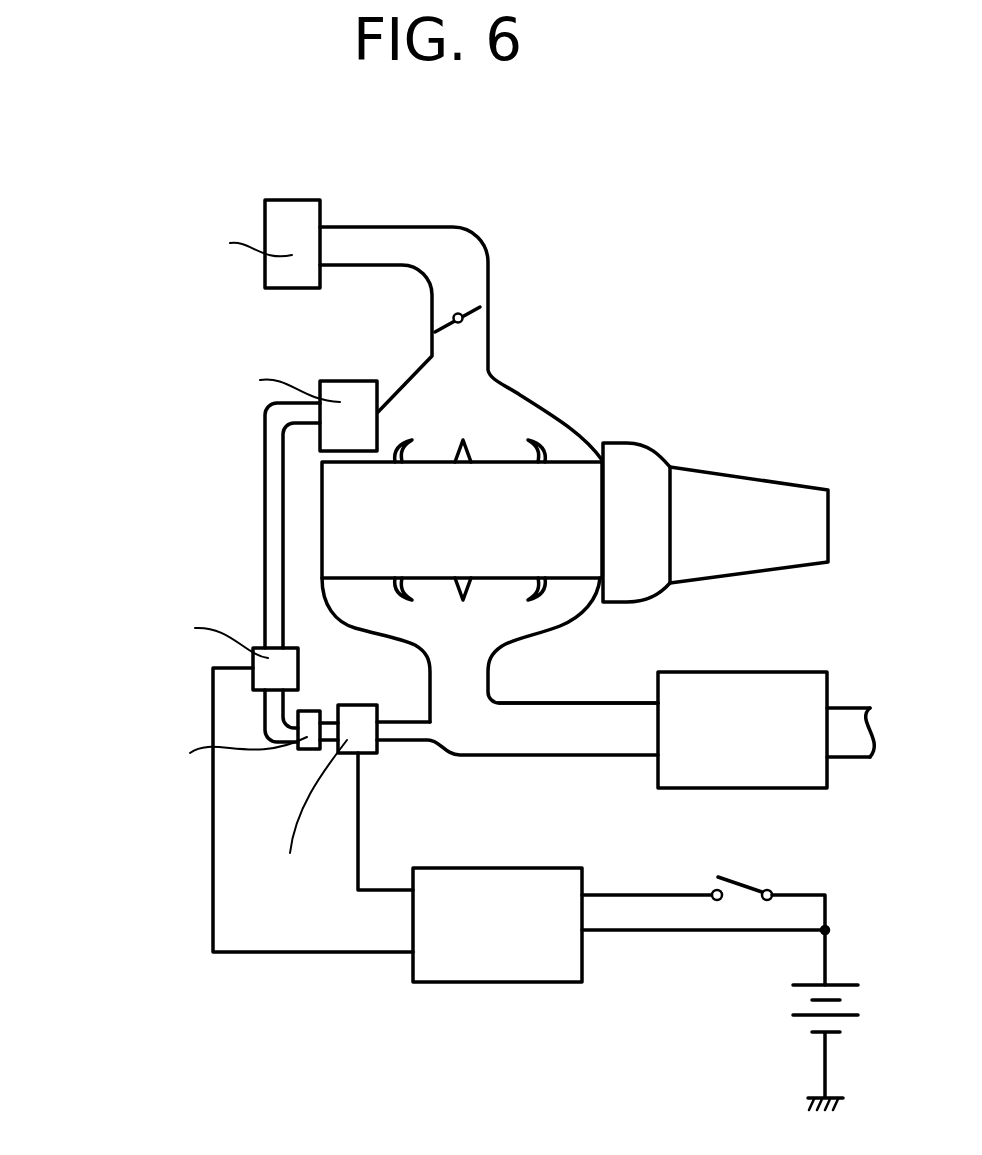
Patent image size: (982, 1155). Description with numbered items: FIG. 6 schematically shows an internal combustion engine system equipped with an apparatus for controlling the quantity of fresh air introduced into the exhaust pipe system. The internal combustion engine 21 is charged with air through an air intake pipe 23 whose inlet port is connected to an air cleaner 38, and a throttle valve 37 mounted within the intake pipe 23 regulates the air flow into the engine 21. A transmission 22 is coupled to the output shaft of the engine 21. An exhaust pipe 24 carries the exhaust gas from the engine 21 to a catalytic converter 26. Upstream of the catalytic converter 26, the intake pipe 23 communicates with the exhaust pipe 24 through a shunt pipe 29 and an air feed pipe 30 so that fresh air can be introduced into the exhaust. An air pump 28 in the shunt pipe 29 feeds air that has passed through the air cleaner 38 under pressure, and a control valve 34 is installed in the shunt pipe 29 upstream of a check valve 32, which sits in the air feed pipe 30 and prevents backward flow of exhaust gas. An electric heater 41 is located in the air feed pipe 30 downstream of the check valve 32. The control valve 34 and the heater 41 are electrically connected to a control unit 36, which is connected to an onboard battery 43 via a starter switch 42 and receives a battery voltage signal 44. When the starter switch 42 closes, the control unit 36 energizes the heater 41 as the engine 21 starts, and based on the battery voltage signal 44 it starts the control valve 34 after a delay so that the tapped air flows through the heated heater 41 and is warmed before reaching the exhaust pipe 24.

The internal combustion engine 21 is at (557, 493).
The transmission 22 is at (722, 487).
The air intake pipe 23 is at (470, 388).
The exhaust pipe 24 is at (538, 740).
The catalytic converter 26 is at (800, 777).
The air pump 28 is at (345, 387).
The shunt pipe 29 is at (265, 525).
The air feed pipe 30 is at (412, 737).
The check valve 32 is at (307, 737).
The control valve 34 is at (257, 655).
The control unit 36 is at (490, 968).
The throttle valve 37 is at (463, 314).
The air cleaner 38 is at (293, 205).
The electric heater 41 is at (353, 753).
The starter switch 42 is at (730, 875).
The onboard battery 43 is at (797, 1013).
The battery voltage signal 44 is at (650, 930).